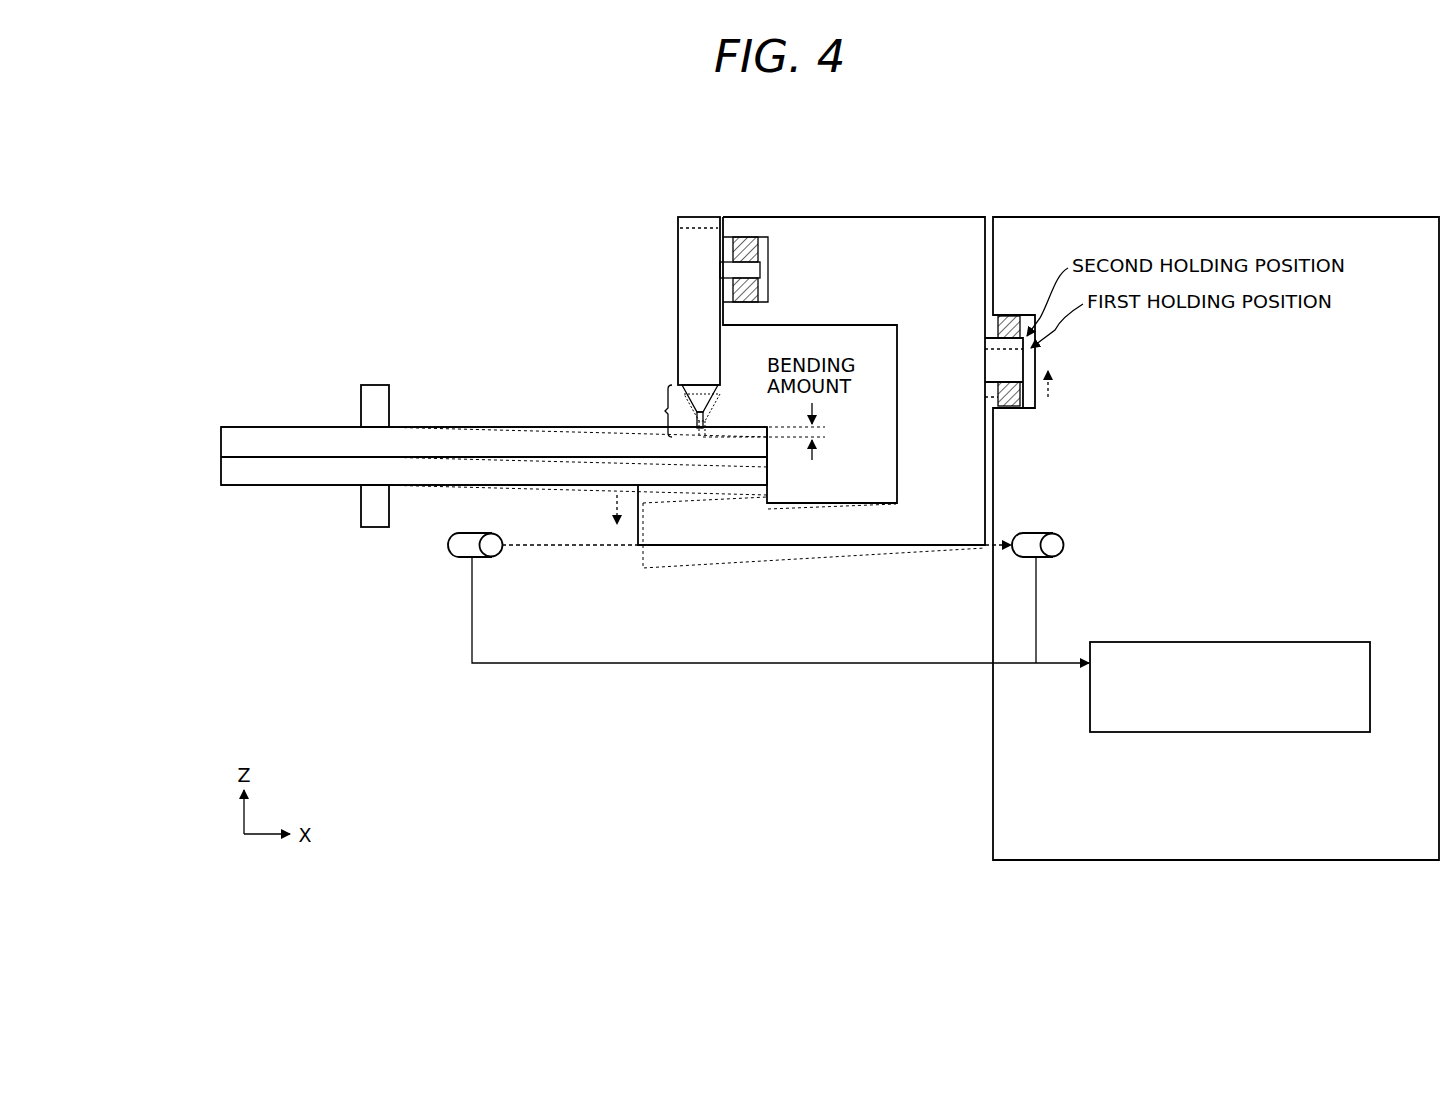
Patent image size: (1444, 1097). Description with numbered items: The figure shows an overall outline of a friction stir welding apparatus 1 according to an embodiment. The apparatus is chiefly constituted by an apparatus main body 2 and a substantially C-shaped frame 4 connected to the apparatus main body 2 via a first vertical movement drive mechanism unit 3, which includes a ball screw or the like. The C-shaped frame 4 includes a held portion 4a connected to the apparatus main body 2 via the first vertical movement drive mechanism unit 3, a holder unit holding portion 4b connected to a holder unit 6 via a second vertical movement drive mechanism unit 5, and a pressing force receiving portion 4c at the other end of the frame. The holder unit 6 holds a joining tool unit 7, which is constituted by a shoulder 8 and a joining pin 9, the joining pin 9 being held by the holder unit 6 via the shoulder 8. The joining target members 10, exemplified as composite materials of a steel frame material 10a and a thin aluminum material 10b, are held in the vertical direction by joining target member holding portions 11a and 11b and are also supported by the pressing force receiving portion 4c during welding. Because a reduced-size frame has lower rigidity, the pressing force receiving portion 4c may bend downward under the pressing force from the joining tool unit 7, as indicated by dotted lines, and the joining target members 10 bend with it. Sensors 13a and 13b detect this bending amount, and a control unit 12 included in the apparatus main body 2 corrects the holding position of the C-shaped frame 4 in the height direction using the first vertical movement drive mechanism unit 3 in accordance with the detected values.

The friction stir welding apparatus 1 is at (1011, 137).
The apparatus main body 2 is at (1272, 217).
The first vertical movement drive mechanism unit 3 is at (1010, 316).
The C-shaped frame 4 is at (892, 203).
The held portion 4a is at (928, 400).
The holder unit holding portion 4b is at (822, 217).
The pressing force receiving portion 4c is at (718, 548).
The second vertical movement drive mechanism unit 5 is at (747, 217).
The holder unit 6 is at (688, 276).
The joining tool unit 7 is at (656, 411).
The shoulder 8 is at (718, 388).
The joining pin 9 is at (705, 416).
The joining target members 10 is at (426, 457).
The steel frame material 10a is at (221, 472).
The thin aluminum material 10b is at (221, 438).
The joining target member holding portion 11a is at (389, 505).
The joining target member holding portion 11b is at (389, 400).
The control unit 12 is at (1272, 642).
The sensor 13a is at (475, 533).
The sensor 13b is at (1037, 533).